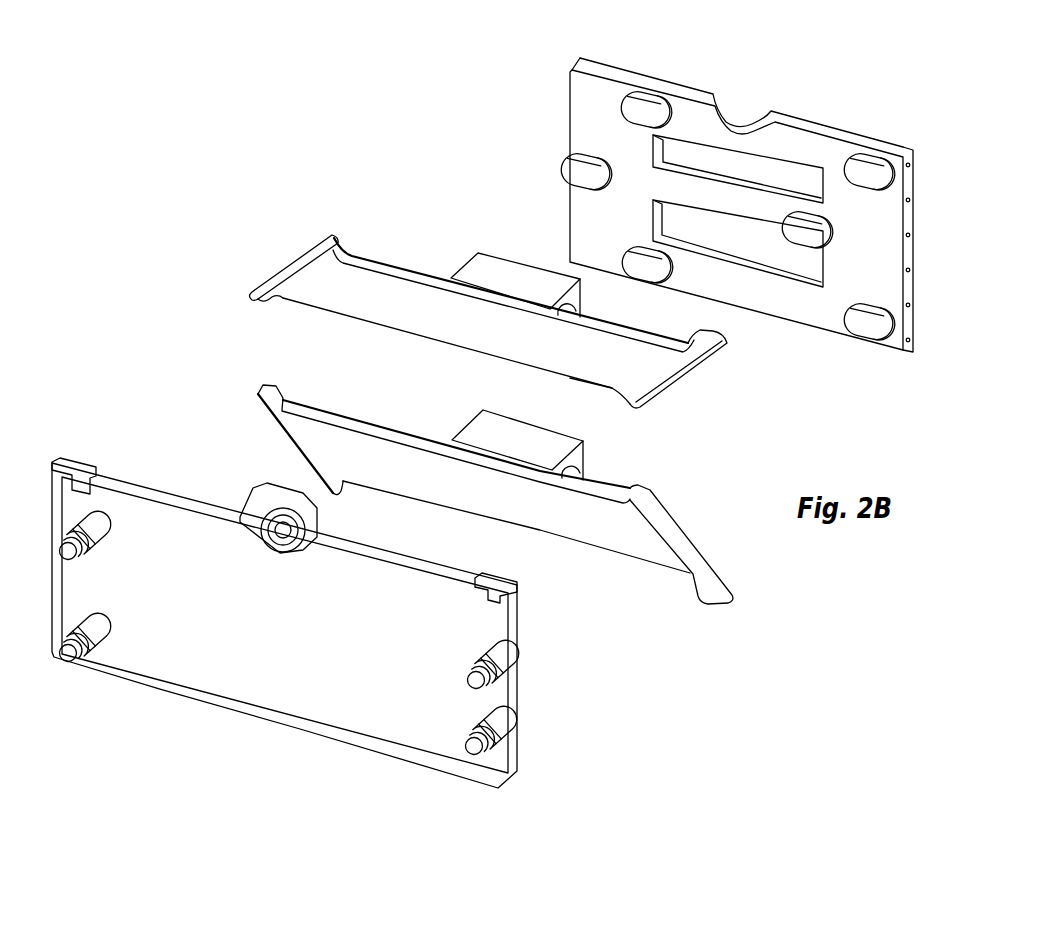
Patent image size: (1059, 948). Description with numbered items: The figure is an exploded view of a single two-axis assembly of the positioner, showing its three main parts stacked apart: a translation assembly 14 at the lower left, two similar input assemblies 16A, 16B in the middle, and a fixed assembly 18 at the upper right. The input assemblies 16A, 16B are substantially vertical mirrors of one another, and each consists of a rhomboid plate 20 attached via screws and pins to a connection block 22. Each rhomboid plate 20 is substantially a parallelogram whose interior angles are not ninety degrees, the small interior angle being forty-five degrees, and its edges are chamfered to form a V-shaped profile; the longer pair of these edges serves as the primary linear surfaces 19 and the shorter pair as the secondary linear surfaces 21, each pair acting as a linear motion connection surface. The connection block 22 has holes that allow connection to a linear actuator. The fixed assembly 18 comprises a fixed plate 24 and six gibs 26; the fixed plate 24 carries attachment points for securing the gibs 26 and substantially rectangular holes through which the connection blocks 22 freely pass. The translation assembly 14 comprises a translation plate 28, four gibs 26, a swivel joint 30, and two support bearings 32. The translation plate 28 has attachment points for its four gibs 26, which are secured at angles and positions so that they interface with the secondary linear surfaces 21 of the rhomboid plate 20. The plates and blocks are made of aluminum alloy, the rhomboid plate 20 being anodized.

The translation assembly 14 is at (368, 590).
The input assembly 16A is at (489, 299).
The input assembly 16B is at (268, 430).
The fixed assembly 18 is at (490, 391).
The primary linear surfaces 19 is at (610, 330).
The rhomboid plate 20 is at (387, 293).
The secondary linear surfaces 21 is at (262, 283).
The connection block 22 is at (500, 258).
The fixed plate 24 is at (822, 112).
The gibs 26 is at (560, 166).
The translation plate 28 is at (332, 746).
The swivel joint 30 is at (242, 508).
The support bearings 32 is at (90, 468).